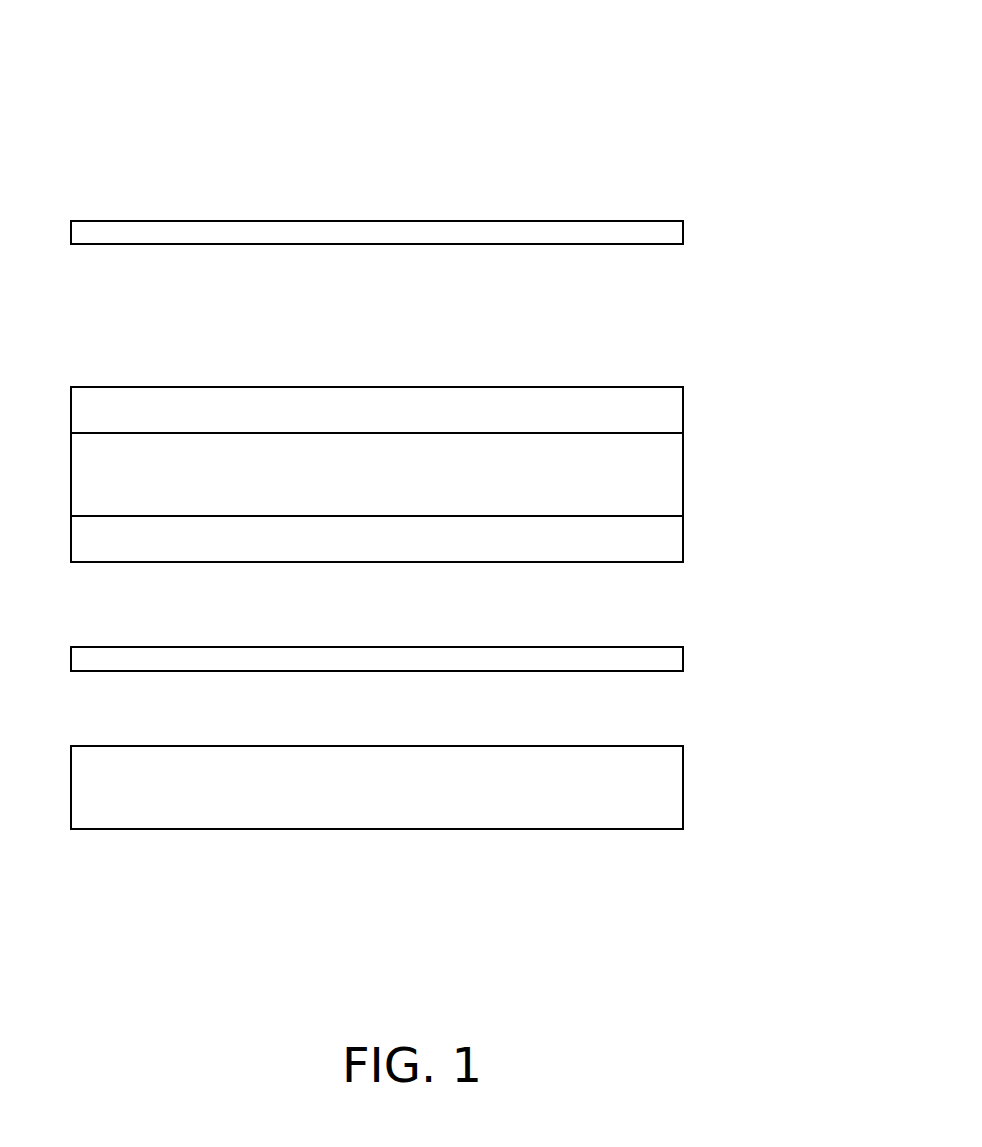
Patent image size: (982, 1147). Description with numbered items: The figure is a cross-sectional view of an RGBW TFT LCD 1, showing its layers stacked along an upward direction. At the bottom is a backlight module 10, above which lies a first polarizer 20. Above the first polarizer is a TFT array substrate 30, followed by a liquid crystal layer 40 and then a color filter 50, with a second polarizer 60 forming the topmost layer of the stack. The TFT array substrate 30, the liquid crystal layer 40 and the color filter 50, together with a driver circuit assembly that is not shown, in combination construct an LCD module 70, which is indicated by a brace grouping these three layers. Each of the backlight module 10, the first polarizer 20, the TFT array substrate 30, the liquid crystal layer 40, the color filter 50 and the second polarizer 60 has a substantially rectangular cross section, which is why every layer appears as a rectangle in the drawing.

The RGBW TFT LCD 1 is at (360, 28).
The backlight module 10 is at (663, 782).
The first polarizer 20 is at (673, 658).
The TFT array substrate 30 is at (428, 537).
The liquid crystal layer 40 is at (665, 475).
The color filter 50 is at (673, 413).
The second polarizer 60 is at (672, 233).
The LCD module 70 is at (459, 472).